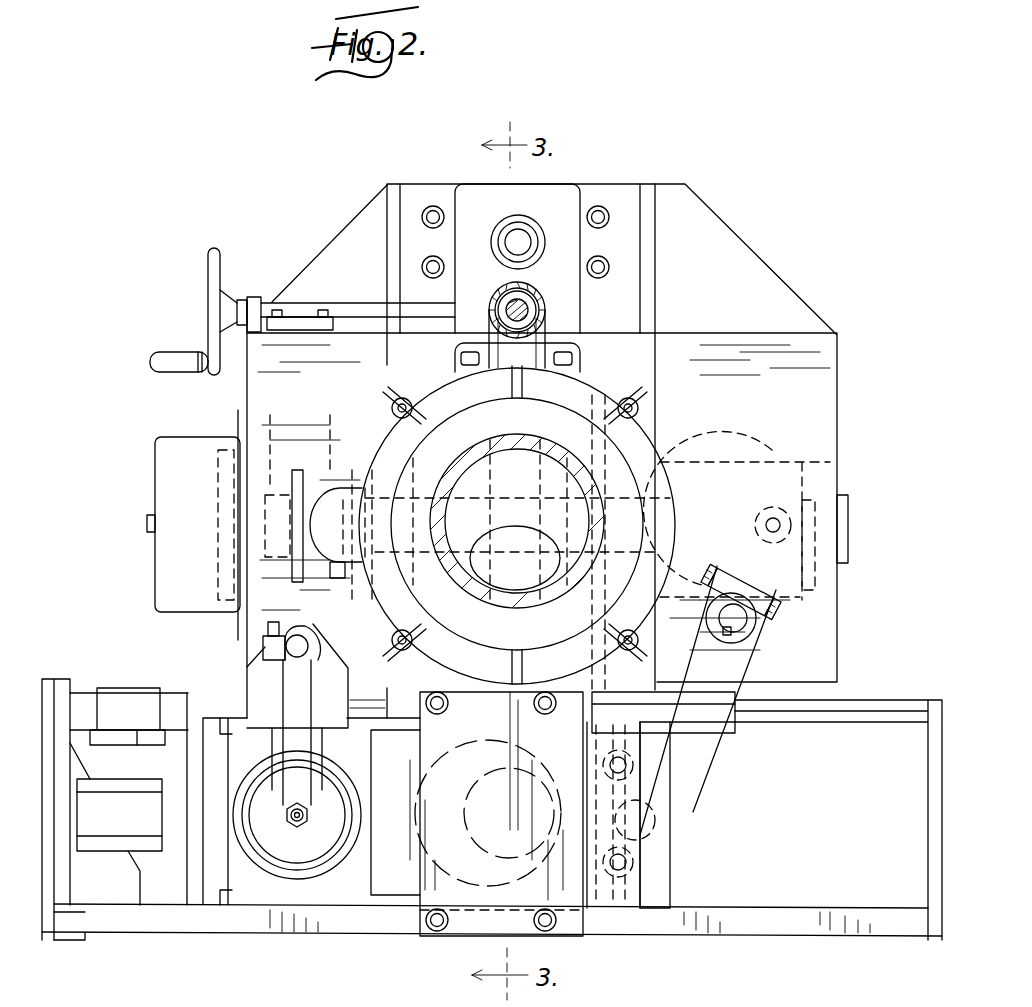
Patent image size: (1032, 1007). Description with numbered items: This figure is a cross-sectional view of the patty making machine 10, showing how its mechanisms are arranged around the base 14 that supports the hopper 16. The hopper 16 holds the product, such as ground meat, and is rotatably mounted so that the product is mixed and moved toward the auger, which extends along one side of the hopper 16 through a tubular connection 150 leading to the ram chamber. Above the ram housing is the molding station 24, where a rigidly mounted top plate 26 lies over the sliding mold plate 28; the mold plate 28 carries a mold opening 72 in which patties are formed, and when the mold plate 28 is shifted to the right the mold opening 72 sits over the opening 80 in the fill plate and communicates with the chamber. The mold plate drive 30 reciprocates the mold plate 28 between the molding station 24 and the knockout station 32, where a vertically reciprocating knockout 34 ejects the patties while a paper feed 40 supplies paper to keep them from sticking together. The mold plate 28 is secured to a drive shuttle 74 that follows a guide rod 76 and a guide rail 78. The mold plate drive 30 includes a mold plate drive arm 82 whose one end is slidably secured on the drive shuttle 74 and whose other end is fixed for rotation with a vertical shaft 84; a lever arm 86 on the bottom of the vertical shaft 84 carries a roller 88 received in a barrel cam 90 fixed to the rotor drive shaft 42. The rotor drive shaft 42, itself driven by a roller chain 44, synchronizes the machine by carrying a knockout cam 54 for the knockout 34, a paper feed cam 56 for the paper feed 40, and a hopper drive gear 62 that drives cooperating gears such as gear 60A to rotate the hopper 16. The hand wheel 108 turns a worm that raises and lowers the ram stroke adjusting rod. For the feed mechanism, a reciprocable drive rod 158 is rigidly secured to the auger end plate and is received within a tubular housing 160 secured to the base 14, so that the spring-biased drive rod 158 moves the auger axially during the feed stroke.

The patty making machine 10 is at (748, 151).
The base 14 is at (838, 385).
The hopper 16 is at (601, 570).
The molding station 24 is at (521, 776).
The top plate 26 is at (490, 735).
The mold plate 28 is at (606, 925).
The mold plate drive 30 is at (710, 756).
The knockout station 32 is at (340, 898).
The knockout 34 is at (297, 759).
The paper feed 40 is at (162, 889).
The rotor drive shaft 42 is at (377, 472).
The roller chain 44 is at (565, 648).
The knockout cam 54 is at (290, 462).
The paper feed cam 56 is at (340, 602).
The cooperating gear 60A is at (193, 541).
The hopper drive gear 62 is at (228, 572).
The mold opening 72 is at (258, 858).
The drive shuttle 74 is at (655, 852).
The guide rod 76 is at (862, 708).
The guide rail 78 is at (810, 935).
The opening 80 is at (470, 826).
The mold plate drive arm 82 is at (720, 658).
The vertical shaft 84 is at (758, 628).
The lever arm 86 is at (836, 590).
The roller 88 is at (815, 480).
The barrel cam 90 is at (762, 458).
The hand wheel 108 is at (214, 258).
The tubular connection 150 is at (511, 530).
The drive rod 158 is at (526, 308).
The tubular housing 160 is at (555, 352).